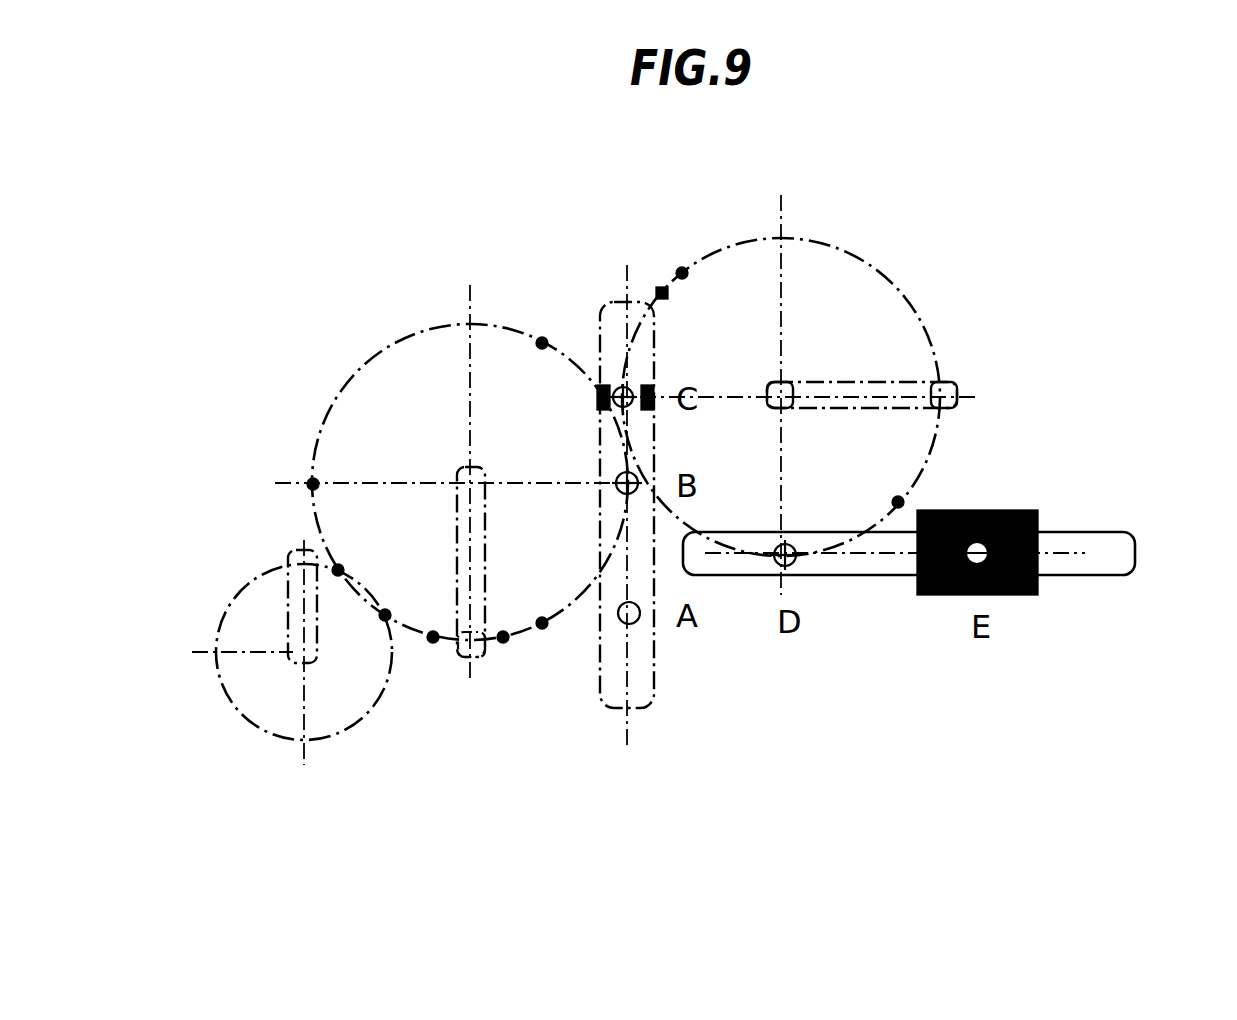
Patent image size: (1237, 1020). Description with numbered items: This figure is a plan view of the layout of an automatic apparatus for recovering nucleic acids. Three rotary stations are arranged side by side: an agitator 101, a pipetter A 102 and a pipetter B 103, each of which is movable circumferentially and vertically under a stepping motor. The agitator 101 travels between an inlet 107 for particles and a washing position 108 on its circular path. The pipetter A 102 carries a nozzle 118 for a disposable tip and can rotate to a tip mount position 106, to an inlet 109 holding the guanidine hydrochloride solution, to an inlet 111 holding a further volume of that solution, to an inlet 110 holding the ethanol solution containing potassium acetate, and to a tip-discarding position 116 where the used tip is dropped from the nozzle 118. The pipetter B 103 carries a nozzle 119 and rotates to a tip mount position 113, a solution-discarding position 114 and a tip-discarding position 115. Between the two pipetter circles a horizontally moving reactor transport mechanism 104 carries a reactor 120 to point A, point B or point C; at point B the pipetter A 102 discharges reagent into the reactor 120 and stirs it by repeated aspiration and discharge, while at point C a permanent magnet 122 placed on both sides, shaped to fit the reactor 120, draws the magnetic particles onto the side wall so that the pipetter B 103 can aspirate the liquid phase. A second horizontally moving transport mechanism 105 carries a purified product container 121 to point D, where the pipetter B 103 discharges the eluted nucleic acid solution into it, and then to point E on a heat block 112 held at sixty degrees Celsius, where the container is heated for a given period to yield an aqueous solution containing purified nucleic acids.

The agitator 101 is at (298, 552).
The pipetter A 102 is at (462, 660).
The pipetter B 103 is at (950, 382).
The reactor transport mechanism 104 is at (645, 708).
The transport mechanism for a purified product container 105 is at (1130, 572).
The tip mount position 106 is at (313, 480).
The inlet for particles 107 is at (338, 566).
The washing position 108 is at (385, 611).
The inlet 109 is at (433, 642).
The inlet 110 is at (503, 642).
The inlet 111 is at (542, 618).
The heat block 112 is at (1000, 595).
The tip mount position 113 is at (894, 500).
The solution-discarding position 114 is at (662, 299).
The tip-discarding position 115 is at (682, 268).
The tip-discarding position 116 is at (542, 338).
The nozzle 118 is at (484, 658).
The nozzle 119 is at (955, 408).
The reactor 120 is at (640, 620).
The purified product container 121 is at (795, 565).
The permanent magnet 122 is at (650, 410).